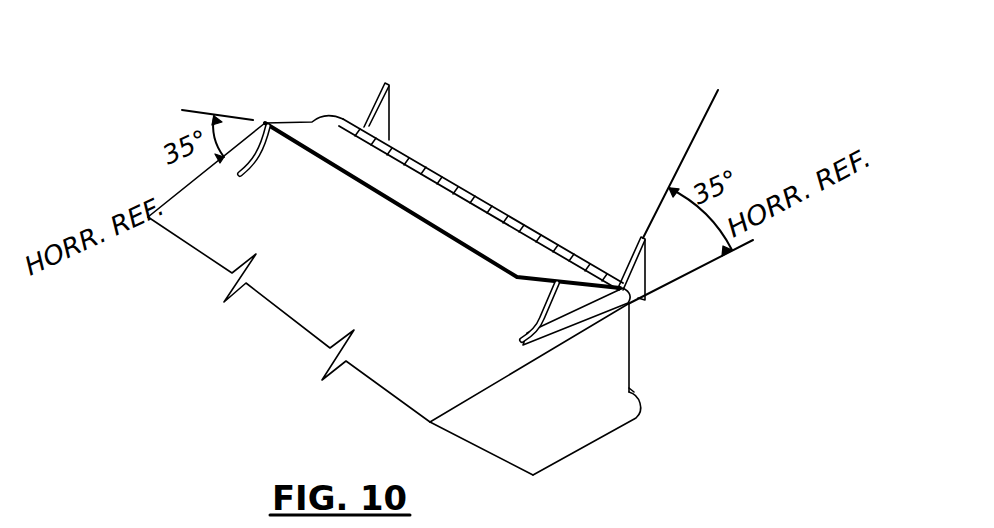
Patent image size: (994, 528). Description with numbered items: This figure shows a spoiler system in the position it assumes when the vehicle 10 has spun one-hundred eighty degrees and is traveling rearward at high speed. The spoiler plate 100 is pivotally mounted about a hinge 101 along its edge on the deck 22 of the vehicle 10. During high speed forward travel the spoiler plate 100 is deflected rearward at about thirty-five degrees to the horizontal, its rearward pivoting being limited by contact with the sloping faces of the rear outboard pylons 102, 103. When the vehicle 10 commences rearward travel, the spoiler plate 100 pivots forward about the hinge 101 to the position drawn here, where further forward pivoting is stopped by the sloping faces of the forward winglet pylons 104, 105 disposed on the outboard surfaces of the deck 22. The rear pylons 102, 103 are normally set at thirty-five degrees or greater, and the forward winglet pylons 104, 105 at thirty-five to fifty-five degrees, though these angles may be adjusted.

The vehicle 10 is at (632, 395).
The deck 22 is at (260, 199).
The spoiler plate 100 is at (440, 200).
The hinge 101 is at (410, 157).
The outboard pylon 102 is at (380, 113).
The outboard pylon 103 is at (697, 268).
The winglet pylon 104 is at (273, 178).
The winglet pylon 105 is at (494, 316).